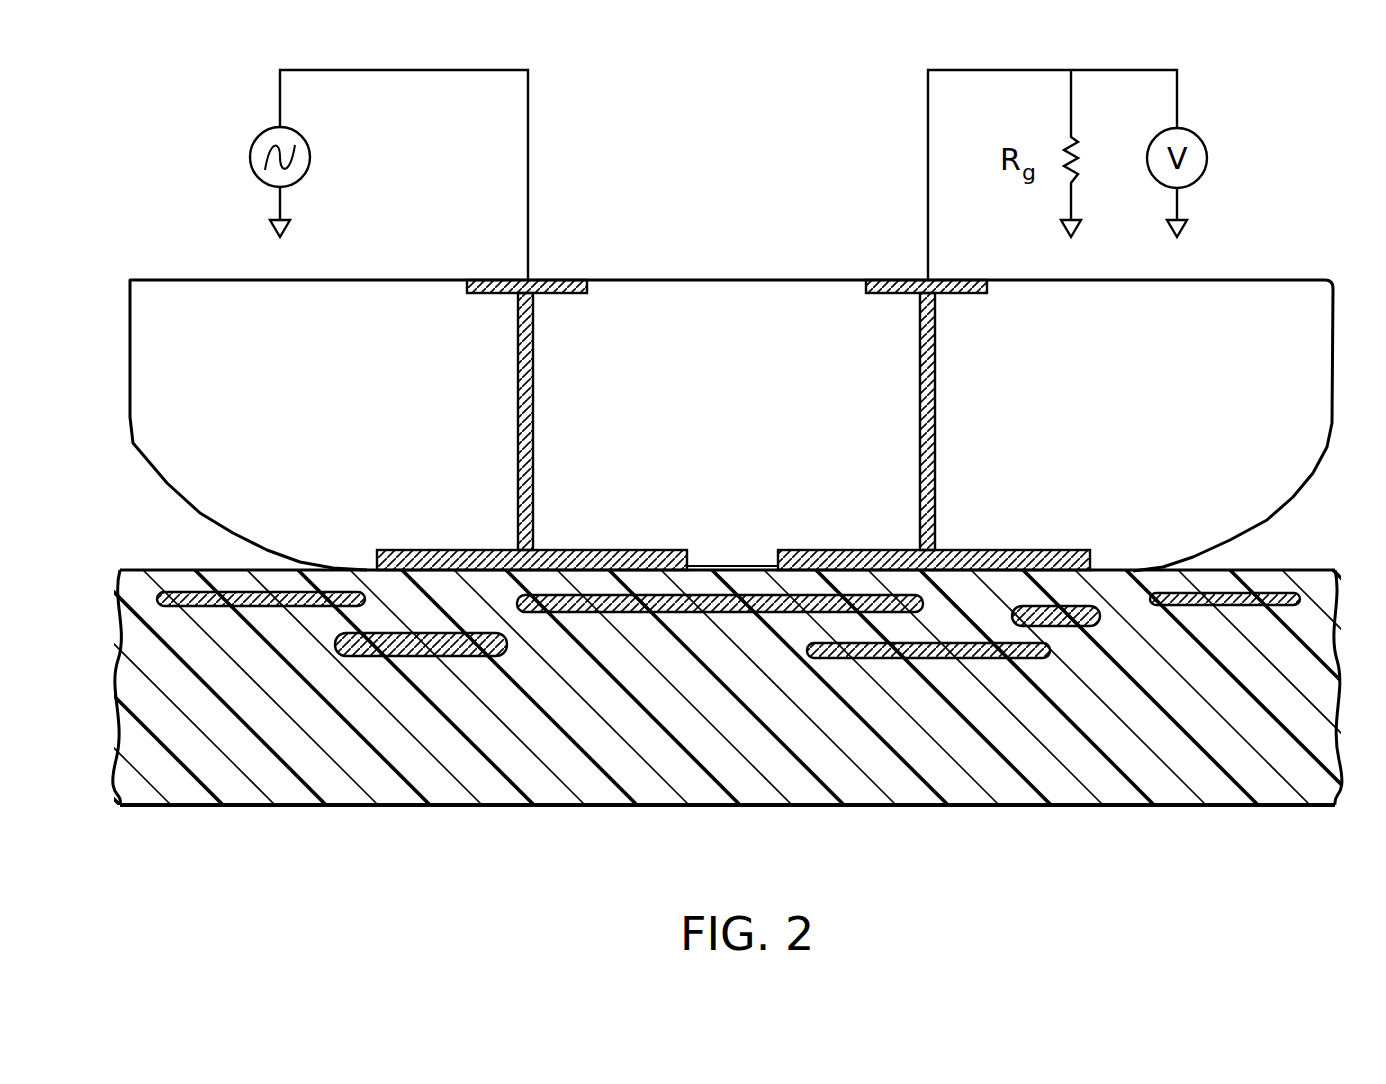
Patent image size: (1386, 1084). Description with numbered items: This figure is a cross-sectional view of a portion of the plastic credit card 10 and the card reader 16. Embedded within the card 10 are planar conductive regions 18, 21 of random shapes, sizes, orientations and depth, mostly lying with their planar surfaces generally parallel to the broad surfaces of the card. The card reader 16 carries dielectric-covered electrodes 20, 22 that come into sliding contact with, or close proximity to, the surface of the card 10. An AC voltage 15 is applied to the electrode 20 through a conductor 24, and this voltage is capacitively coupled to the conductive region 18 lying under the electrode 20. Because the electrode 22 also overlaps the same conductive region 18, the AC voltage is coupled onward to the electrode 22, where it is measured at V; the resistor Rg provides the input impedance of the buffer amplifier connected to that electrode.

The plastic credit card 10 is at (216, 804).
The AC voltage 15 is at (266, 129).
The card reader 16 is at (1276, 280).
The conductive region 18 is at (711, 593).
The electrode 20 is at (480, 549).
The conductive regions 21 is at (197, 592).
The electrode 22 is at (884, 550).
The conductor 24 is at (528, 218).